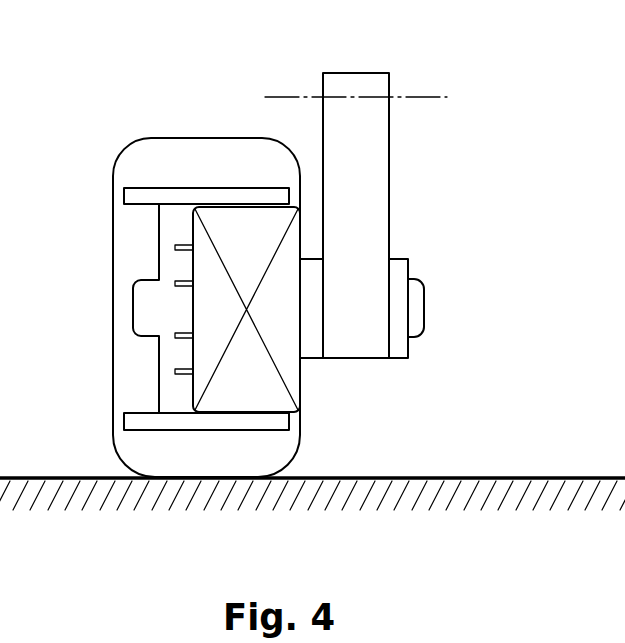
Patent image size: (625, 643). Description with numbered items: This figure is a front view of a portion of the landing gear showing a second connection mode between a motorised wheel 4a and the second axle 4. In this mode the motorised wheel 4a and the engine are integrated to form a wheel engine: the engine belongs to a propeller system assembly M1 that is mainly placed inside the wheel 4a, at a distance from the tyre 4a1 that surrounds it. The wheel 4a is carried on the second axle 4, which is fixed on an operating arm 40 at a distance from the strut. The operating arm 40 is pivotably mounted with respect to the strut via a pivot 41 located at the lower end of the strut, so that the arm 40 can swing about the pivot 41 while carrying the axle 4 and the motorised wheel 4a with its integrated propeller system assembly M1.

The second axle 4 is at (415, 308).
The motorised wheel 4a is at (130, 421).
The tyre 4a1 is at (143, 170).
The operating arm 40 is at (390, 197).
The pivot 41 is at (425, 97).
The propeller system assembly M1 is at (245, 224).